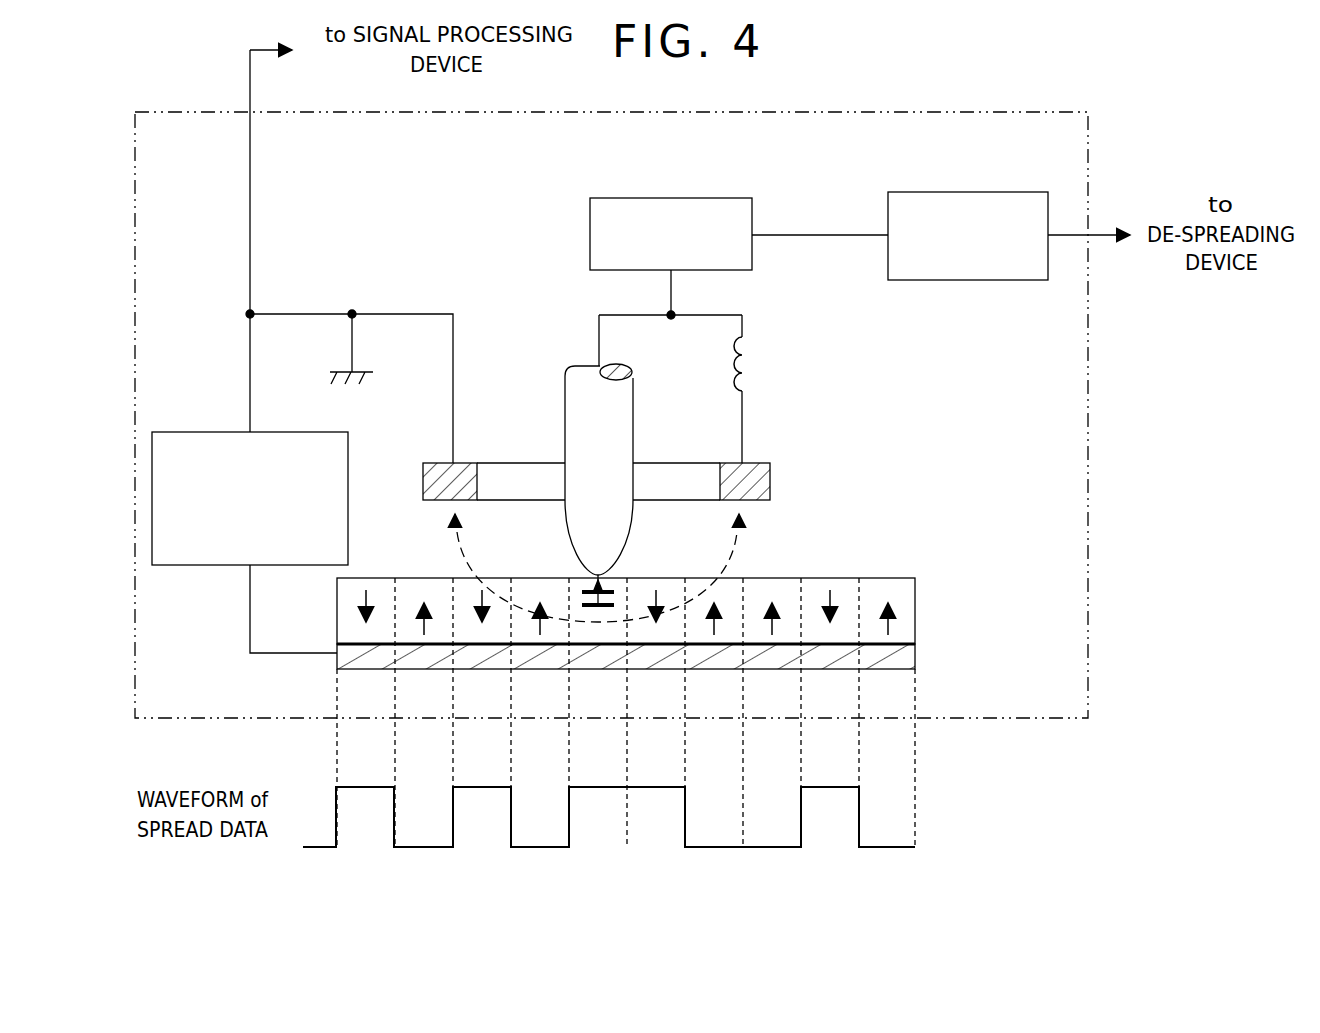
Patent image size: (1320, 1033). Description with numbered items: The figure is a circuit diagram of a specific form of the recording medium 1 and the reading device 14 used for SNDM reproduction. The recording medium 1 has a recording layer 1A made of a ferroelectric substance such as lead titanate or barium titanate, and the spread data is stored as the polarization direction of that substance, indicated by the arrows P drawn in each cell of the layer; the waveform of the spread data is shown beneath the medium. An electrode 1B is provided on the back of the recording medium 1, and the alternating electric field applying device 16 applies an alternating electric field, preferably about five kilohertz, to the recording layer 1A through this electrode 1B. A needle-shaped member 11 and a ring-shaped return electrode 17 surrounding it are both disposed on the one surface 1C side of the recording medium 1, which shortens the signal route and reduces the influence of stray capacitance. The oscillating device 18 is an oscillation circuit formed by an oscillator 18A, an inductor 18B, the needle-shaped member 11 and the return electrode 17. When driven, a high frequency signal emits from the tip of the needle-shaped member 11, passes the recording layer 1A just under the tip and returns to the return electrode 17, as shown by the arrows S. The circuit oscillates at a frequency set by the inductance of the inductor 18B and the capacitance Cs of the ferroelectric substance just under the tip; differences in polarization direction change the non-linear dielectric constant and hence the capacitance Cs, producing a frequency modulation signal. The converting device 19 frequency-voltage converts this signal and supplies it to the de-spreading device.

The recording medium 1 is at (925, 568).
The recording layer 1A is at (918, 612).
The electrode 1B is at (918, 668).
The one surface 1C is at (830, 578).
The needle-shaped member 11 is at (628, 410).
The reading device 14 is at (852, 112).
The alternating electric field applying device 16 is at (188, 431).
The return electrode 17 is at (770, 462).
The oscillating device 18 is at (775, 286).
The oscillator 18A is at (714, 198).
The inductor 18B is at (752, 350).
The converting device 19 is at (990, 192).
The arrows S is at (448, 552).
The arrows P is at (337, 612).
The capacitance Cs is at (597, 608).